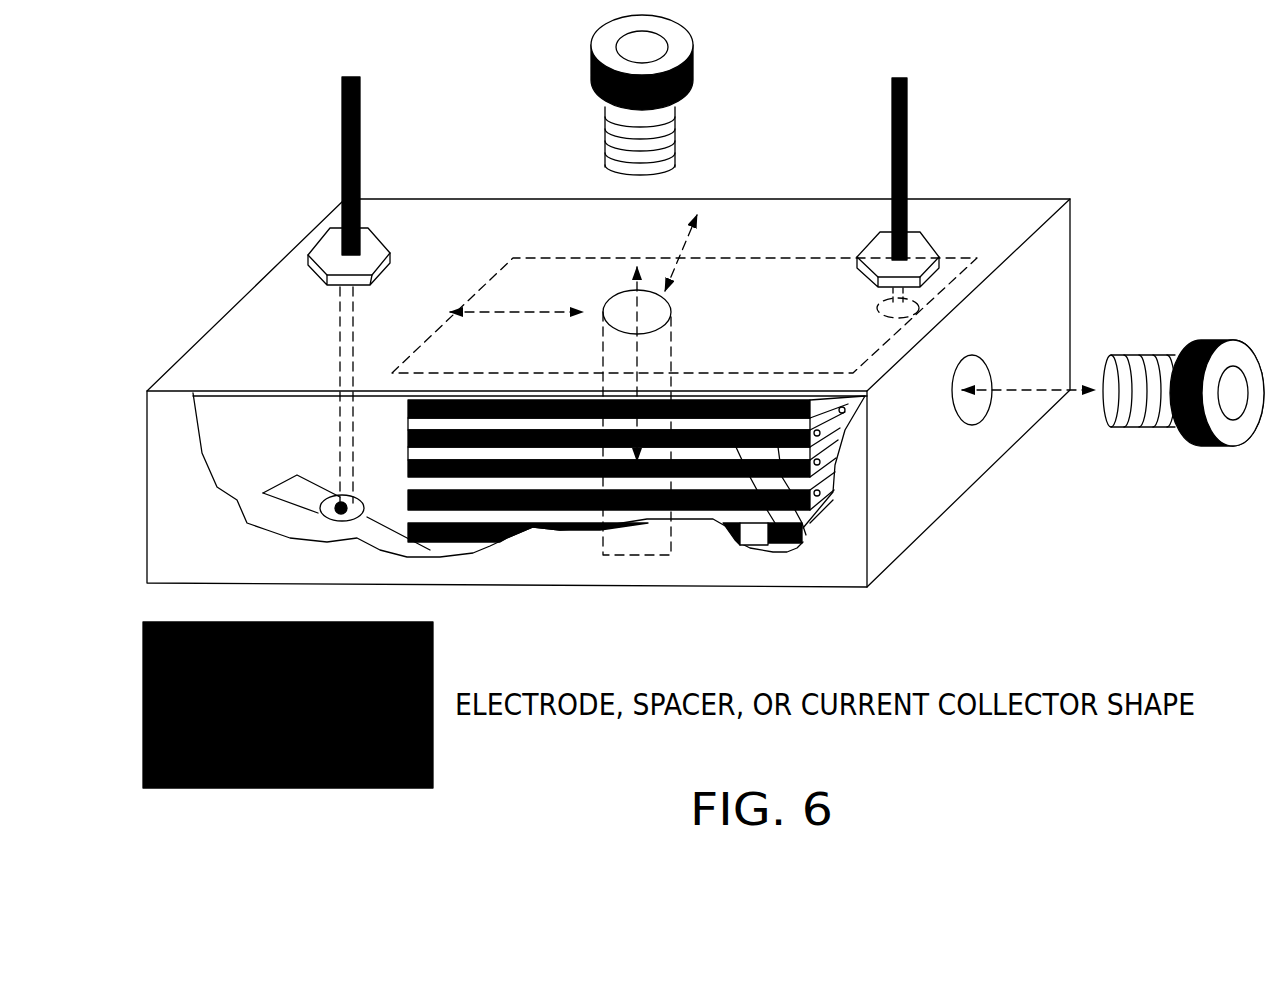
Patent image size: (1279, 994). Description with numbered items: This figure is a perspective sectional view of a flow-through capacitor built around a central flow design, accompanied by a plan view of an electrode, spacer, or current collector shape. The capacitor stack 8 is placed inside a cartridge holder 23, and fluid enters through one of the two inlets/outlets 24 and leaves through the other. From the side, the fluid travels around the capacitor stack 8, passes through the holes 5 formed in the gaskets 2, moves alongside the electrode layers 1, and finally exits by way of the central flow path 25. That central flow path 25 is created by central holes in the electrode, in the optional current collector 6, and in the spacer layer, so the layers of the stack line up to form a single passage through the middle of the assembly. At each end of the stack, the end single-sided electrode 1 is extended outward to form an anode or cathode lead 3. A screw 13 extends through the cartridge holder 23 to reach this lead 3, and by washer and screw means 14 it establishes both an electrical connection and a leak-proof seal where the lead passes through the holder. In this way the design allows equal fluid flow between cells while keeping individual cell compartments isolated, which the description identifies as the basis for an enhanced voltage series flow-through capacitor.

The electrode layer 1 is at (803, 542).
The gasket 2 is at (777, 431).
The lead 3 is at (346, 512).
The hole 5 is at (838, 458).
The current collector 6 is at (407, 453).
The capacitor stack 8 is at (586, 396).
The screw 13 is at (340, 125).
The washer and screw means 14 is at (873, 236).
The cartridge holder 23 is at (750, 565).
The inlet/outlet 24 is at (599, 128).
The central flow path 25 is at (621, 290).